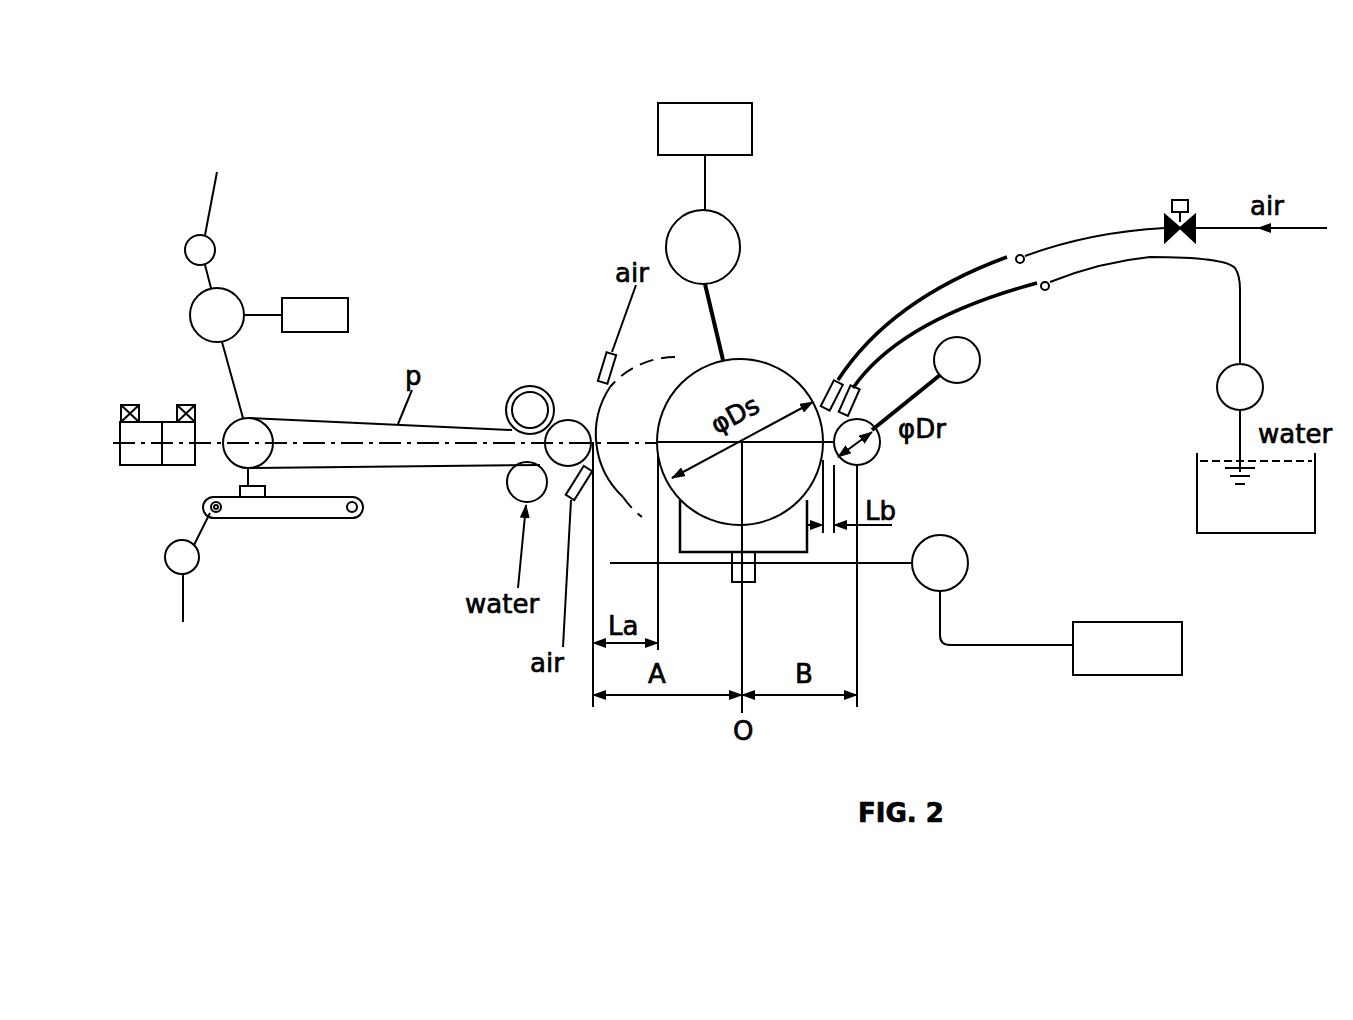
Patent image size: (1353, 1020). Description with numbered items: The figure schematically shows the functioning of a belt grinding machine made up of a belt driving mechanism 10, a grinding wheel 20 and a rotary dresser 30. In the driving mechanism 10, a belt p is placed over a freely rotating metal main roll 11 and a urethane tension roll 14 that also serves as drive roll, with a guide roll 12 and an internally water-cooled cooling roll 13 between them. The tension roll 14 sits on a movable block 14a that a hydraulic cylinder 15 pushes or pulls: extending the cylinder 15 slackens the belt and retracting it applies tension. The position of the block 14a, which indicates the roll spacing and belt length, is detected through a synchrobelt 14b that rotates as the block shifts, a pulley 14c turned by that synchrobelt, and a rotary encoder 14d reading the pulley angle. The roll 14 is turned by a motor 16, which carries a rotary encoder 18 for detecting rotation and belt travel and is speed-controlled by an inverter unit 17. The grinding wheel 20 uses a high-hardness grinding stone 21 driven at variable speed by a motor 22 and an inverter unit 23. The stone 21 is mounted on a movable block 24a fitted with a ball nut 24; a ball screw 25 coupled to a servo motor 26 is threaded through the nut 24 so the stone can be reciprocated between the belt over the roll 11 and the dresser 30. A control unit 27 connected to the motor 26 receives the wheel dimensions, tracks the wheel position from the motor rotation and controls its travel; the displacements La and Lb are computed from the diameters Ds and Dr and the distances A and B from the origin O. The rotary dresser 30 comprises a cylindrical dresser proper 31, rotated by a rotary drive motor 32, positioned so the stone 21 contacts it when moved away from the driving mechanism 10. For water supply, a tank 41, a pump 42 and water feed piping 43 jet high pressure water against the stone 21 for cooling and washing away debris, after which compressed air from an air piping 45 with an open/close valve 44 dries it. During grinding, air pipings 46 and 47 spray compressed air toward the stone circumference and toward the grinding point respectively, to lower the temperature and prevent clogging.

The belt driving mechanism 10 is at (142, 265).
The main roll 11 is at (567, 428).
The guide roll 12 is at (520, 400).
The cooling roll 13 is at (520, 485).
The tension roll 14 is at (252, 422).
The movable block 14a is at (250, 483).
The synchrobelt 14b is at (296, 519).
The pulley 14c is at (219, 513).
The rotary encoder 14d is at (180, 581).
The hydraulic cylinder 15 is at (130, 466).
The motor 16 is at (237, 296).
The inverter unit 17 is at (322, 298).
The rotary encoder 18 is at (211, 202).
The grinding wheel 20 is at (788, 296).
The grinding stone 21 is at (700, 370).
The motor 22 is at (668, 237).
The inverter unit 23 is at (688, 103).
The ball nut 24 is at (738, 582).
The movable block 24a is at (690, 532).
The ball screw 25 is at (818, 566).
The servo motor 26 is at (974, 590).
The control unit 27 is at (1076, 660).
The rotary dresser 30 is at (957, 440).
The dresser proper 31 is at (876, 456).
The rotary drive motor 32 is at (978, 376).
The tank 41 is at (1195, 500).
The pump 42 is at (1216, 387).
The water feed piping 43 is at (1098, 264).
The open/close valve 44 is at (1170, 218).
The air piping 45 is at (948, 292).
The air piping 46 is at (622, 320).
The air piping 47 is at (567, 613).